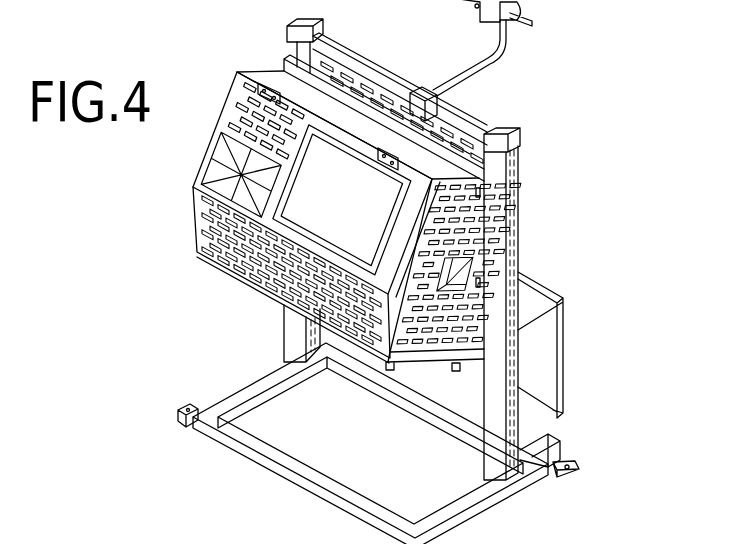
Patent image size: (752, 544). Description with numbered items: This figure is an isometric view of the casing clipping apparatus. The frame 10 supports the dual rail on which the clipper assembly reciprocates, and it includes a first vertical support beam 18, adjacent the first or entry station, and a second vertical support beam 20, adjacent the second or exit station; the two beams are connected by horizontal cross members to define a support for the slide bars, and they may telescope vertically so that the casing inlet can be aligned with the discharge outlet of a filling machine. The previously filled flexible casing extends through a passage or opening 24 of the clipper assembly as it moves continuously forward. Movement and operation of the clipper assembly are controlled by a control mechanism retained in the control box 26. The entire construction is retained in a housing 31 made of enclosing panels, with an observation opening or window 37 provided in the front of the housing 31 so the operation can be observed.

The frame 10 is at (514, 180).
The first vertical support beam 18 is at (510, 422).
The second vertical support beam 20 is at (284, 339).
The passage or opening 24 is at (466, 270).
The control box 26 is at (550, 358).
The housing 31 is at (191, 231).
The observation opening or window 37 is at (352, 219).